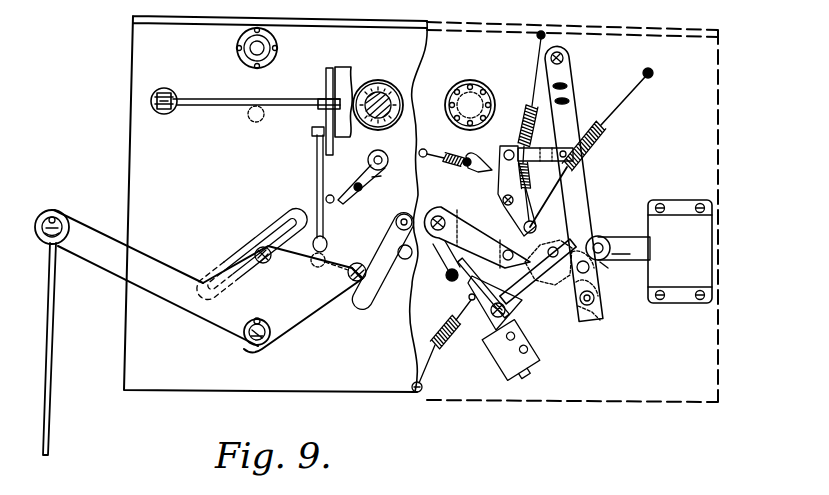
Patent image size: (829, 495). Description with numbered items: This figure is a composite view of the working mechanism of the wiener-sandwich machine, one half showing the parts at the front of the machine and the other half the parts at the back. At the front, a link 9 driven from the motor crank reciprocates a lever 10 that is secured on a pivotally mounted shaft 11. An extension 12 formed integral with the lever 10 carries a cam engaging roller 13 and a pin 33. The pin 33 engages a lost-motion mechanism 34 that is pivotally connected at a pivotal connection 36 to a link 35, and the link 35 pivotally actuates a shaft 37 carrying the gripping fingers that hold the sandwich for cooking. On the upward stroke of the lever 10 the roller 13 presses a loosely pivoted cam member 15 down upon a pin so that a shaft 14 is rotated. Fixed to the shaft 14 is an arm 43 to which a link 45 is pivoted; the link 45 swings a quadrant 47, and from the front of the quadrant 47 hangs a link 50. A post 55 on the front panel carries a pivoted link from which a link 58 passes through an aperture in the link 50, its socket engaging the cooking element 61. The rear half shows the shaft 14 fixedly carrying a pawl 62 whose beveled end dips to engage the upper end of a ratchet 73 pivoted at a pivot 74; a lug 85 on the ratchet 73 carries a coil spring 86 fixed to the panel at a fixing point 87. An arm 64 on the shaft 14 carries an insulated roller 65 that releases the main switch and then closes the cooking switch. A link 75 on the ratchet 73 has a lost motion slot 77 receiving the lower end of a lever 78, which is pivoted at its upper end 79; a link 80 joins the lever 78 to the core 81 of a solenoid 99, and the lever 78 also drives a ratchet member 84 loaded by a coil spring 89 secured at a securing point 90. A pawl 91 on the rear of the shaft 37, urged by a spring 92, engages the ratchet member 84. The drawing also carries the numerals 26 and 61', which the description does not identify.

The link 9 is at (58, 316).
The lever 10 is at (181, 263).
The pivotally-mounted shaft 11 is at (268, 330).
The extension 12 is at (316, 307).
The cam engaging roller 13 is at (348, 282).
The shaft 14 is at (403, 213).
The cam member 15 is at (374, 288).
The flange 26 is at (260, 48).
The pin 33 is at (270, 260).
The lost-motion mechanism 34 is at (292, 220).
The link 35 is at (386, 178).
The pivotal connection 36 is at (358, 184).
The shaft 37 is at (386, 153).
The arm 43 is at (372, 246).
The link 45 is at (318, 170).
The quadrant 47 is at (333, 76).
The link 50 is at (324, 101).
The post 55 is at (160, 90).
The link 58 is at (196, 106).
The cooking element 61 is at (384, 85).
The gear 61' is at (470, 90).
The pawl 62 is at (483, 240).
The arm 64 is at (446, 272).
The insulated roller 65 is at (456, 288).
The ratchet 73 is at (520, 310).
The pivot 74 is at (497, 300).
The link 75 is at (563, 275).
The lost motion slot 77 is at (578, 313).
The lever 78 is at (575, 100).
The upper end 79 is at (566, 56).
The link 80 is at (610, 268).
The core 81 is at (634, 242).
The ratchet member 84 is at (498, 192).
The lug 85 is at (548, 173).
The coil spring 86 is at (446, 347).
The fixing point 87 is at (560, 147).
The coil spring 89 is at (604, 147).
The securing point 90 is at (654, 72).
The pawl 91 is at (482, 158).
The spring 92 is at (449, 166).
The solenoid 99 is at (691, 196).